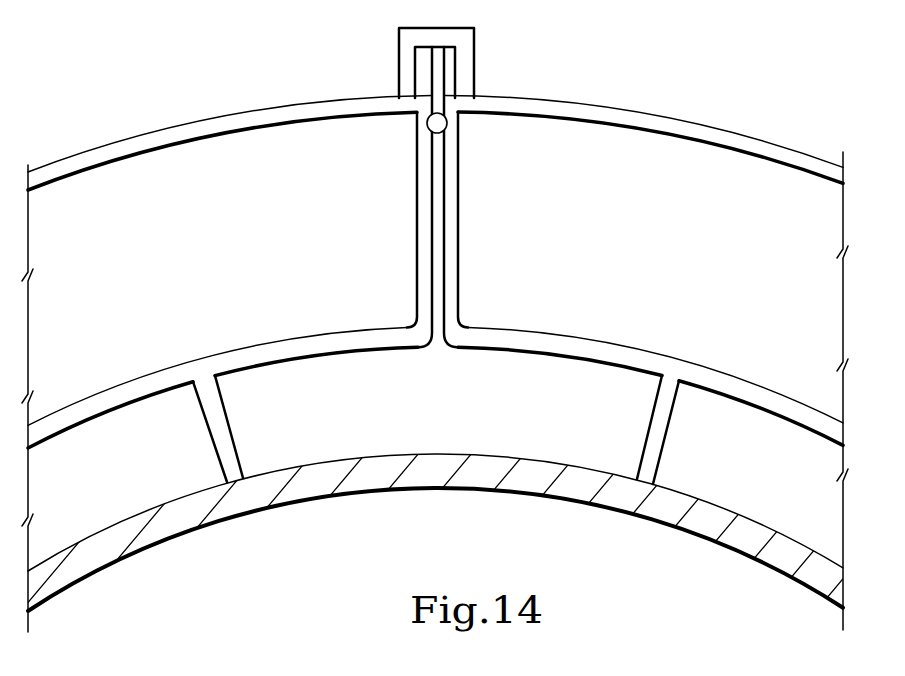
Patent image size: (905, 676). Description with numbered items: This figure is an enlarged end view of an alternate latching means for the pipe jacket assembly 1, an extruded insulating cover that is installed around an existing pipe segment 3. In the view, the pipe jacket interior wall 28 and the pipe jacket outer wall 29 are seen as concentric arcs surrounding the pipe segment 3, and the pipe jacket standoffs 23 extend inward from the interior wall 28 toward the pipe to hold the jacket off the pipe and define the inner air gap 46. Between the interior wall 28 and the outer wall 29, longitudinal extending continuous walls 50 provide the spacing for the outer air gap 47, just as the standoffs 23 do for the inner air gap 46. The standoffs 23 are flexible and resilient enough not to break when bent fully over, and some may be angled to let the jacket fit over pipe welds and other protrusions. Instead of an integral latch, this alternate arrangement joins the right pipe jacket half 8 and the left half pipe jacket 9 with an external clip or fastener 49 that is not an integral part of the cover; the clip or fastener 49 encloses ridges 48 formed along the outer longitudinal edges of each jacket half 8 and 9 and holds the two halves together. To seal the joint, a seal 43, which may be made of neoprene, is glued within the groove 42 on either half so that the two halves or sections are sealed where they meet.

The pipe jacket assembly 1 is at (748, 103).
The pipe segment 3 is at (357, 485).
The right pipe jacket half 8 is at (575, 102).
The left half pipe jacket 9 is at (302, 104).
The pipe jacket standoffs 23 is at (232, 419).
The pipe jacket interior wall 28 is at (148, 376).
The pipe jacket outer wall 29 is at (435, 128).
The groove 42 is at (447, 124).
The seal 43 is at (427, 126).
The inner air gap 46 is at (107, 471).
The outer air gap 47 is at (212, 244).
The ridges 48 is at (446, 45).
The clip or fastener 49 is at (401, 38).
The longitudinal extending continuous walls 50 is at (416, 252).